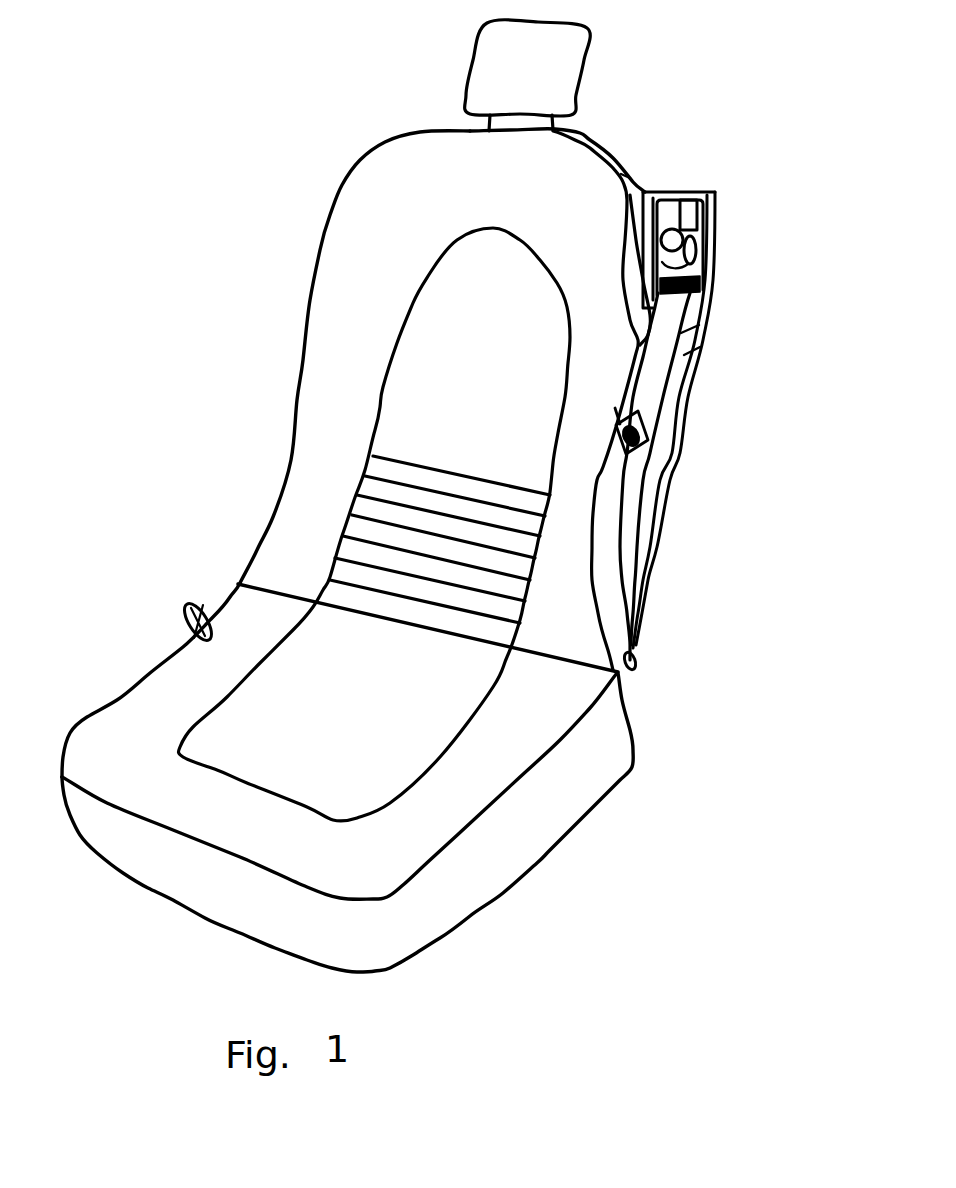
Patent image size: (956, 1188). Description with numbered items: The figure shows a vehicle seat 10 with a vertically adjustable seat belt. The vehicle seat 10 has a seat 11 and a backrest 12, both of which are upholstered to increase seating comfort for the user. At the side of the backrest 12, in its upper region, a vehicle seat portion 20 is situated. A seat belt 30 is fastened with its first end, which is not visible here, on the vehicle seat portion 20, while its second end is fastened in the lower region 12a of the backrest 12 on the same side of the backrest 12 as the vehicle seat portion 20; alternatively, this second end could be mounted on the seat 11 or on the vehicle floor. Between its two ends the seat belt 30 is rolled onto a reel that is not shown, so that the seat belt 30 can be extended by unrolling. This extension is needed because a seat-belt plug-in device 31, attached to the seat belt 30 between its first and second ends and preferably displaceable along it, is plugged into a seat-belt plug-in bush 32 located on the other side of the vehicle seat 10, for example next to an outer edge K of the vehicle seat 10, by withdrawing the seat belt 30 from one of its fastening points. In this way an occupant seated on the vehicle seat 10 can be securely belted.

The vehicle seat 10 is at (290, 100).
The seat 11 is at (535, 838).
The backrest 12 is at (654, 440).
The lower region of the backrest 12a is at (638, 652).
The vehicle seat portion 20 is at (715, 192).
The seat belt 30 is at (622, 532).
The seat-belt plug-in device 31 is at (648, 455).
The seat-belt plug-in bush 32 is at (198, 600).
The outer edge K is at (300, 367).